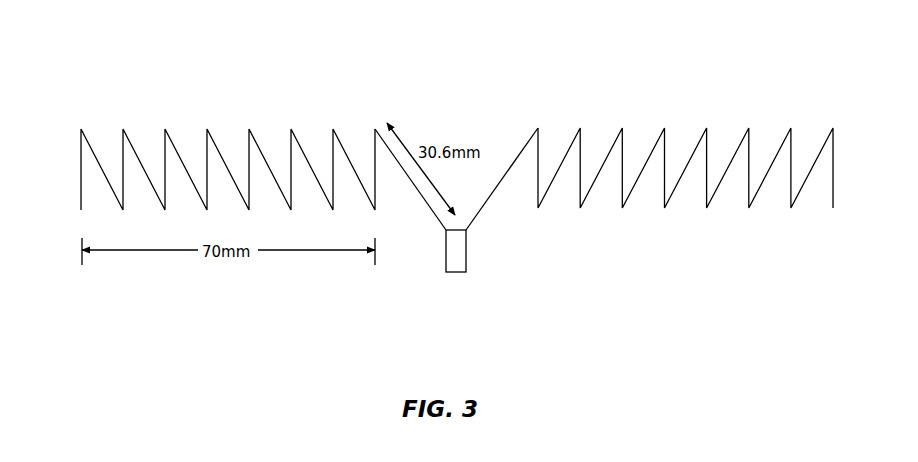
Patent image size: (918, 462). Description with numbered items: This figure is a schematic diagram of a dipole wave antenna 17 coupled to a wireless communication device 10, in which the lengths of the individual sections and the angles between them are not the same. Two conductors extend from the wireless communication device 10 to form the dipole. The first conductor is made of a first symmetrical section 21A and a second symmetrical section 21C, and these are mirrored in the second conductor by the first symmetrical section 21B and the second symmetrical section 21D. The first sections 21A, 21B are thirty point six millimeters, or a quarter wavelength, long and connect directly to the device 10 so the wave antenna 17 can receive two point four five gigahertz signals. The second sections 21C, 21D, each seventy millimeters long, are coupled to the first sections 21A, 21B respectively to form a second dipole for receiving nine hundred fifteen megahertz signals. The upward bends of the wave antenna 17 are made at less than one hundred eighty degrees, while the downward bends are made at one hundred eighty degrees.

The wireless communication device 10 is at (457, 229).
The wave antenna 17 is at (670, 98).
The first symmetrical section 21A is at (414, 187).
The first symmetrical section 21B is at (488, 202).
The second symmetrical section 21C is at (272, 177).
The second symmetrical section 21D is at (682, 182).